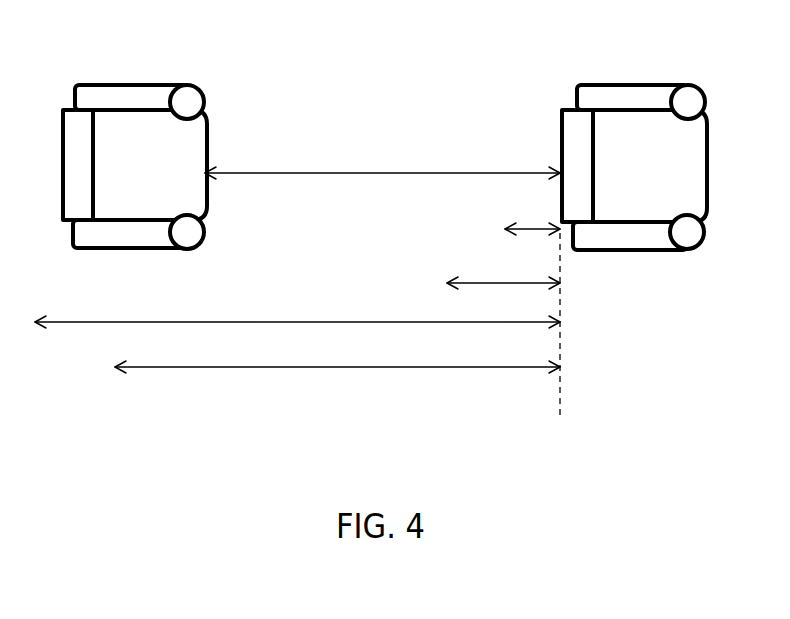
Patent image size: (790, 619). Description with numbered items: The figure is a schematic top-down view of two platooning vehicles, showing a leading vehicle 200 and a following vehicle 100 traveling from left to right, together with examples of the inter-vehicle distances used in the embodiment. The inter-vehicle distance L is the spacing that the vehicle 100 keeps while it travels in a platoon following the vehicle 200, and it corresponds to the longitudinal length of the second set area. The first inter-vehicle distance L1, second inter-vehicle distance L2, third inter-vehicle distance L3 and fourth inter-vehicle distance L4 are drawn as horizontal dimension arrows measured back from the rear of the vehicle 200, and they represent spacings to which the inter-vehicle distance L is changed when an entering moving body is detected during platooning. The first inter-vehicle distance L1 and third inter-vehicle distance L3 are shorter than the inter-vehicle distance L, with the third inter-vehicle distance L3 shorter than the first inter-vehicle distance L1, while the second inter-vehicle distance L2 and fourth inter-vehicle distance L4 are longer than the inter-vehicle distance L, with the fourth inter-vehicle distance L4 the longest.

The vehicle 100 is at (125, 84).
The vehicle 200 is at (633, 83).
The inter-vehicle distance L is at (382, 159).
The first inter-vehicle distance L1 is at (503, 268).
The second inter-vehicle distance L2 is at (337, 353).
The third inter-vehicle distance L3 is at (532, 211).
The fourth inter-vehicle distance L4 is at (297, 308).